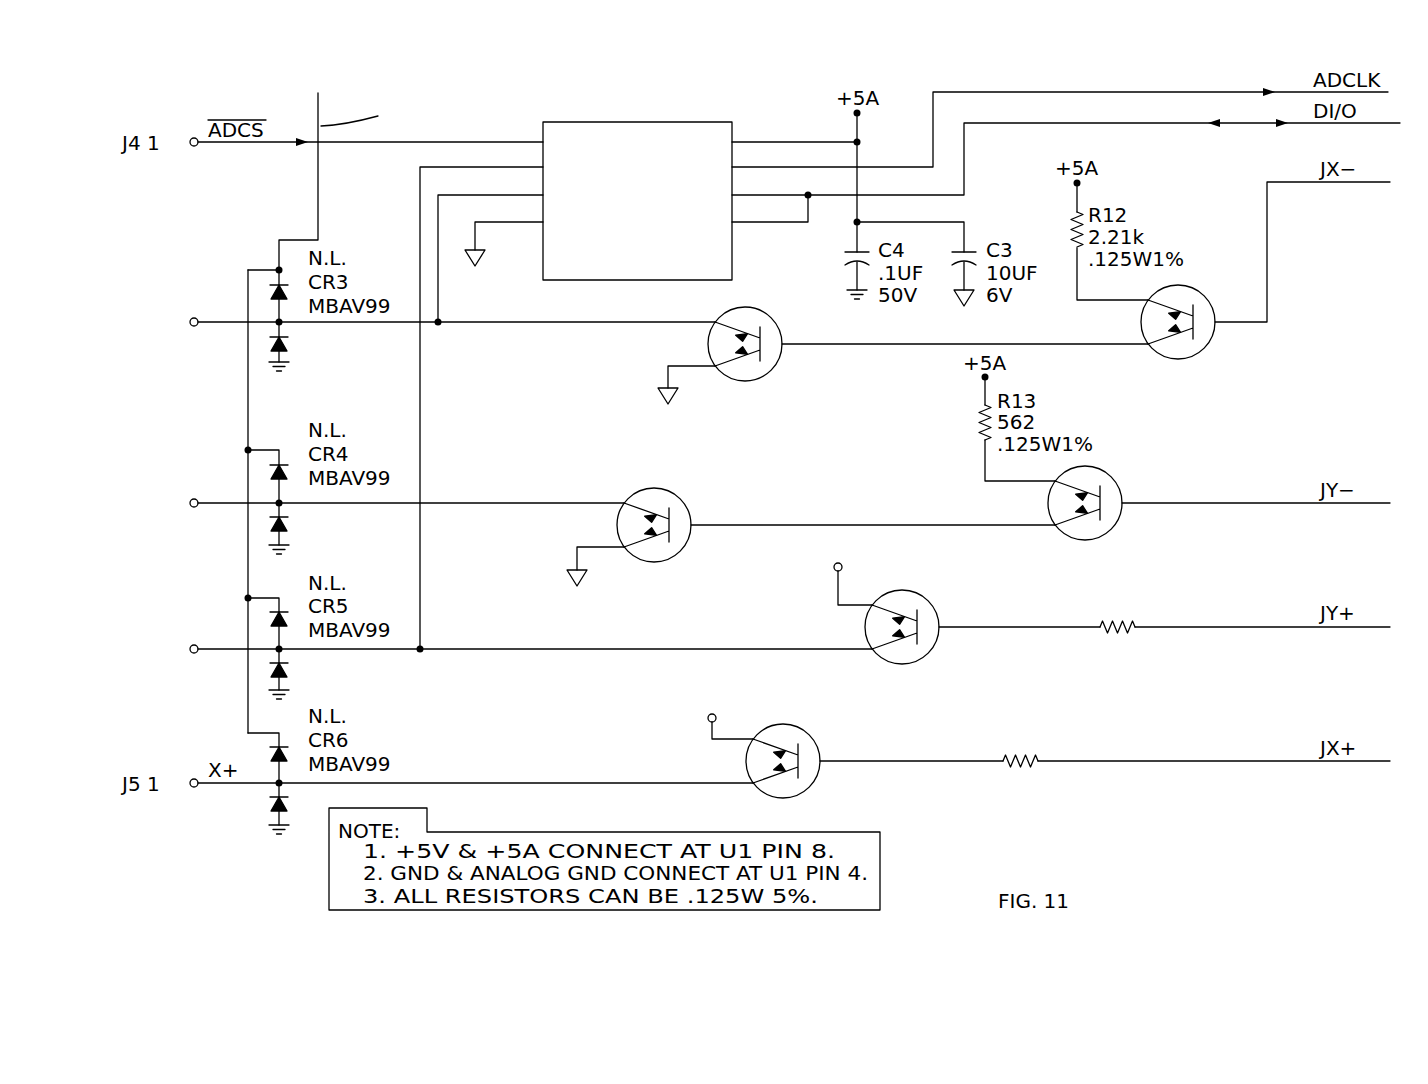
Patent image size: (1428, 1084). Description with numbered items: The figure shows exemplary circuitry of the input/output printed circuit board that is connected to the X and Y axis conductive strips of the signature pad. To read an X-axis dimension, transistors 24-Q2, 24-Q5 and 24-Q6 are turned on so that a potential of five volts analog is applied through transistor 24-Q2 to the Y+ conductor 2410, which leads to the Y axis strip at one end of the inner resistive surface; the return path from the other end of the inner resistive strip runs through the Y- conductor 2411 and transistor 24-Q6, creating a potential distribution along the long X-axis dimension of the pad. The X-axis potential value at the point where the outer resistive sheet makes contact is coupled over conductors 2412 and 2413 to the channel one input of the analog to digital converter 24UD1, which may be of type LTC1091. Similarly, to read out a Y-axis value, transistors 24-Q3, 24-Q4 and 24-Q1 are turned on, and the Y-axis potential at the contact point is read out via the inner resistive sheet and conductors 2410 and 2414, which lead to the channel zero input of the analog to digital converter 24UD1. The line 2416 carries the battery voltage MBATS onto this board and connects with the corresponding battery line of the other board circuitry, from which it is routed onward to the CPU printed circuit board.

The Y+ conductor 2410 is at (232, 654).
The Y- conductor 2411 is at (229, 508).
The conductor 2412 is at (226, 334).
The conductor 2413 is at (445, 288).
The conductor 2414 is at (422, 590).
The line 2416 is at (317, 180).
The analog to digital converter 24UD1 is at (635, 122).
The transistor 24-Q1 is at (808, 735).
The transistor 24-Q2 is at (925, 597).
The transistor 24-Q3 is at (1203, 300).
The transistor 24-Q4 is at (786, 293).
The transistor 24-Q5 is at (1118, 483).
The transistor 24-Q6 is at (668, 492).